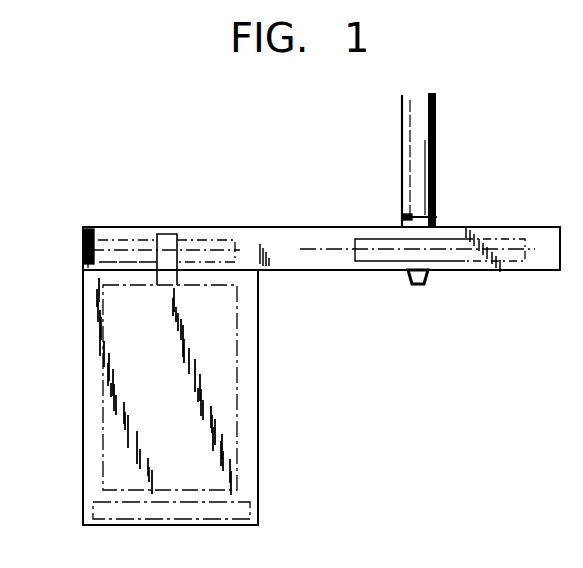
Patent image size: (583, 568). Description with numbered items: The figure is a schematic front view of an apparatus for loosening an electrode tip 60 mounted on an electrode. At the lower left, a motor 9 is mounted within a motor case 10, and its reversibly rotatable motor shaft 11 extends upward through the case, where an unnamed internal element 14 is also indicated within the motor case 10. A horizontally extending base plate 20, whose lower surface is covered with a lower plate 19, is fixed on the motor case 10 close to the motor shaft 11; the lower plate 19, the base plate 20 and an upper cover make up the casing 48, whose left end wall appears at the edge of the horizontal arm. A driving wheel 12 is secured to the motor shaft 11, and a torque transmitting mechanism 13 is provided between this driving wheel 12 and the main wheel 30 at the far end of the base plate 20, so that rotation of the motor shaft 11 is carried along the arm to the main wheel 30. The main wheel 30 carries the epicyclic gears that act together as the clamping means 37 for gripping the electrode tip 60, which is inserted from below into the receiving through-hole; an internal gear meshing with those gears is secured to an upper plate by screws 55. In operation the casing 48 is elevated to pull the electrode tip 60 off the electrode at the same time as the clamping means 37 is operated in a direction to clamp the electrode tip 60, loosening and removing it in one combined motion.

The motor 9 is at (113, 475).
The motor case 10 is at (83, 412).
The motor shaft 11 is at (163, 227).
The driving wheel 12 is at (222, 227).
The torque transmitting mechanism 13 is at (275, 227).
The sheet stack 14 is at (103, 375).
The lower plate 19 is at (323, 271).
The base plate 20 is at (284, 271).
The main wheel 30 is at (454, 261).
The clamping means 37 is at (470, 224).
The casing 48 is at (104, 227).
The screws 55 is at (360, 271).
The electrode tip 60 is at (418, 167).